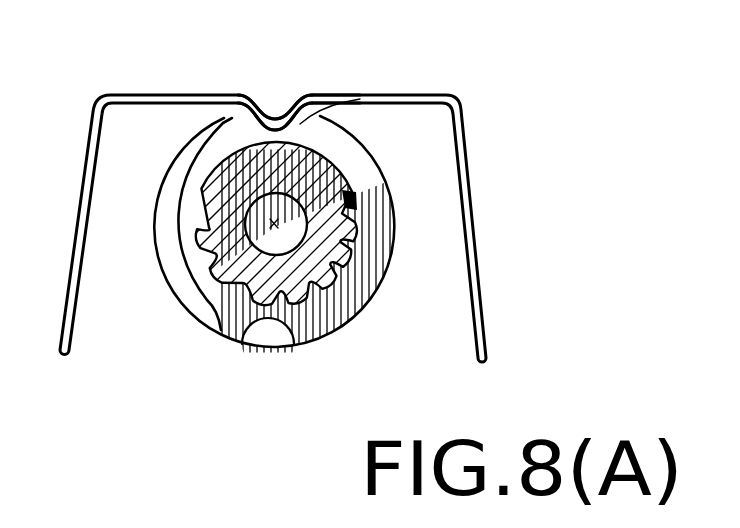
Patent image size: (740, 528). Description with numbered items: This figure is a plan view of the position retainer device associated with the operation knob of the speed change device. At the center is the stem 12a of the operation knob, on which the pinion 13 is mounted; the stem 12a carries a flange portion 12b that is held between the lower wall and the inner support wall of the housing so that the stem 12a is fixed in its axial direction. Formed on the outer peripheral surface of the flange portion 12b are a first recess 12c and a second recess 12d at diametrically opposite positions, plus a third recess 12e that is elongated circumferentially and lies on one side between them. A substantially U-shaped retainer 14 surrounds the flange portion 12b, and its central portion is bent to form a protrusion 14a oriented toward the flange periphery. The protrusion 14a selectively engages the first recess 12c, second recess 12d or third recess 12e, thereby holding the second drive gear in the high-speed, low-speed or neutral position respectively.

The stem 12a is at (280, 224).
The flange portion 12b is at (400, 259).
The first recess 12c is at (278, 334).
The second recess 12d is at (275, 128).
The third recess 12e is at (178, 184).
The pinion 13 is at (328, 278).
The retainer 14 is at (465, 136).
The protrusion 14a is at (306, 114).